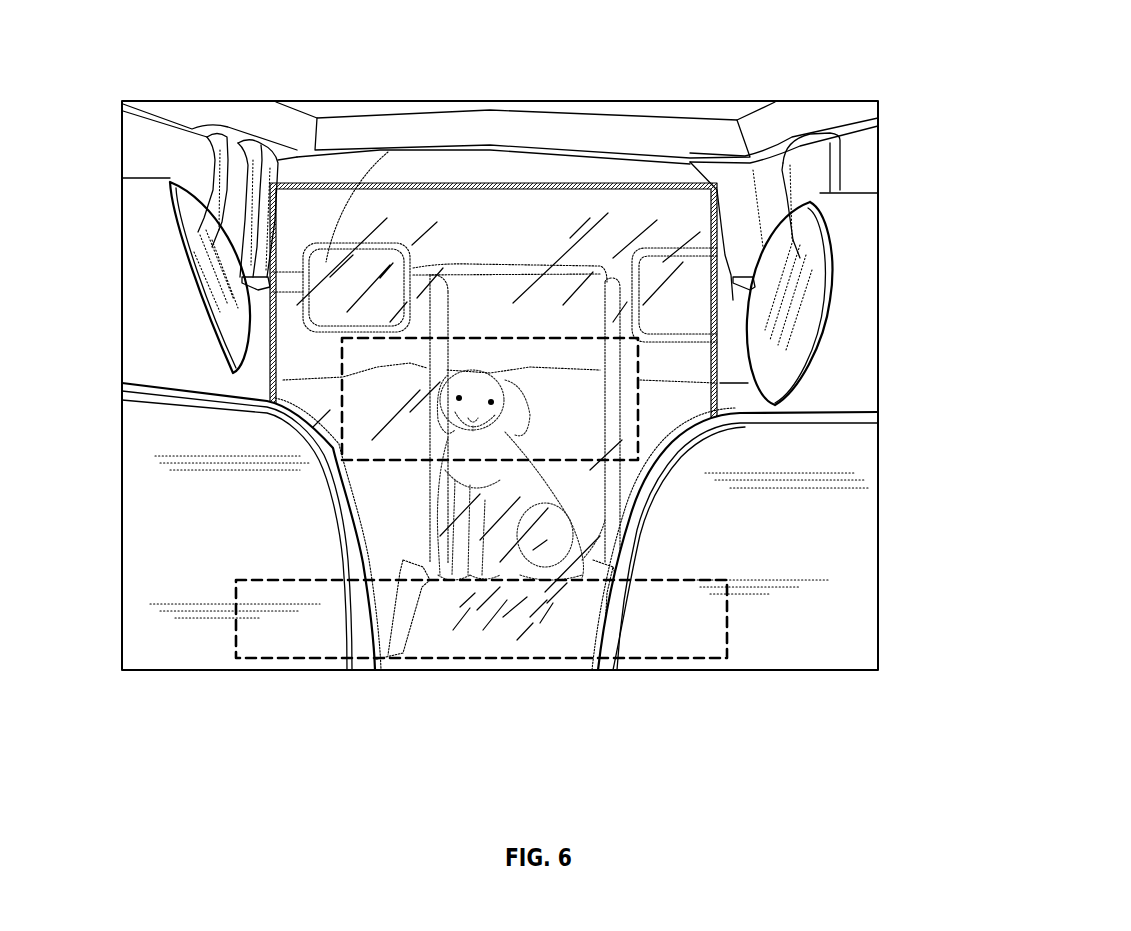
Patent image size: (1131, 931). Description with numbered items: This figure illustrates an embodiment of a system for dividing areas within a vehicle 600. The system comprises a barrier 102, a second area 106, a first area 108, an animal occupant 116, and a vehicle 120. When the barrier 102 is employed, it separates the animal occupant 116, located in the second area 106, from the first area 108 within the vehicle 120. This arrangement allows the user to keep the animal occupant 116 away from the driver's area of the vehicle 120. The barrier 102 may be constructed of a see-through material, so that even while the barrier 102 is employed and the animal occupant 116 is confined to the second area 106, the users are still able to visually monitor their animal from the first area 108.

The system for dividing areas within a vehicle 600 is at (1037, 110).
The barrier 102 is at (552, 207).
The second area 106 is at (492, 338).
The first area 108 is at (727, 620).
The animal occupant 116 is at (453, 441).
The vehicle 120 is at (155, 457).